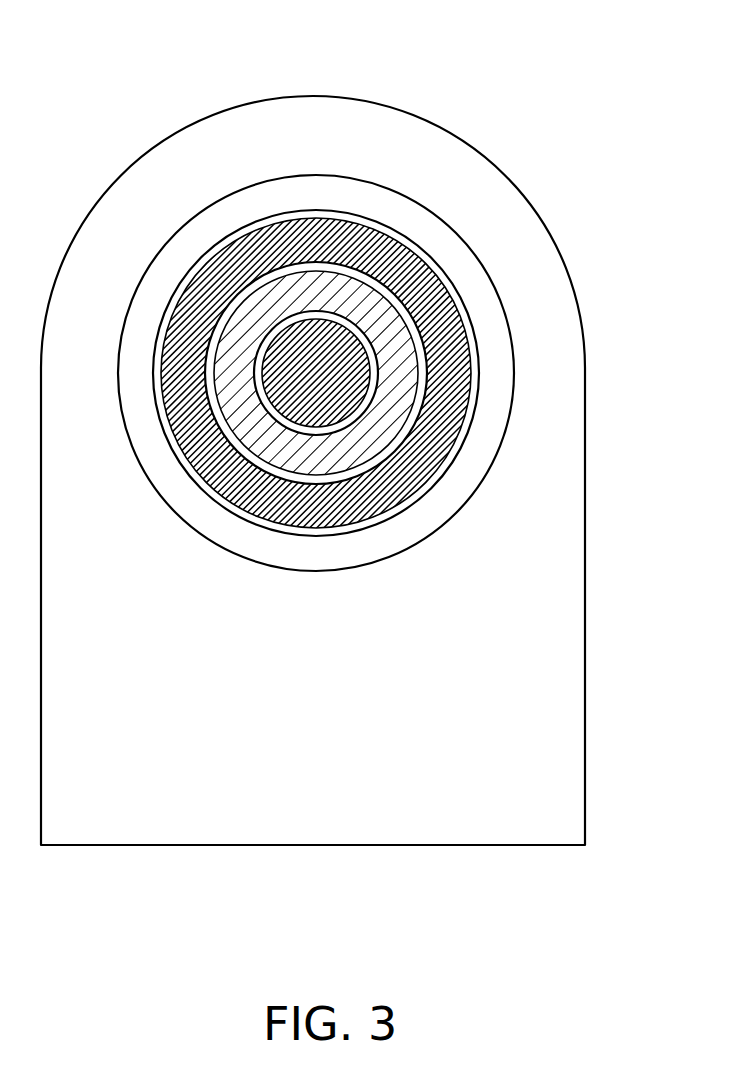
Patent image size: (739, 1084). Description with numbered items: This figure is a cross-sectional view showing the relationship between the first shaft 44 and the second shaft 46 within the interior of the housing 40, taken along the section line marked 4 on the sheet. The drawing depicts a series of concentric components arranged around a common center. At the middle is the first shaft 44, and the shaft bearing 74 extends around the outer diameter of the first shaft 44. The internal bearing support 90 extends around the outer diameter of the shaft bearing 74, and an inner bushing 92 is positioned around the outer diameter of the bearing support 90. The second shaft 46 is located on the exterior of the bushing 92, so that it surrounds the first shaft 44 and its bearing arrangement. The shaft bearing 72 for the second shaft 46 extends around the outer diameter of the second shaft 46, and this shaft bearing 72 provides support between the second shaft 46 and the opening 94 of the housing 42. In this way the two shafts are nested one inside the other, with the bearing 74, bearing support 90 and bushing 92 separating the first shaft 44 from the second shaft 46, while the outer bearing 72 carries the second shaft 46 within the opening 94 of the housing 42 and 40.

The section line 4- 4 is at (316, 888).
The housing 40 is at (628, 245).
The housing 42 is at (587, 636).
The first shaft 44 is at (347, 343).
The second shaft 46 is at (405, 265).
The shaft bearing 72 is at (455, 452).
The shaft bearing 74 is at (380, 360).
The internal bearing support 90 is at (400, 384).
The inner bushing 92 is at (420, 402).
The opening 94 is at (455, 512).